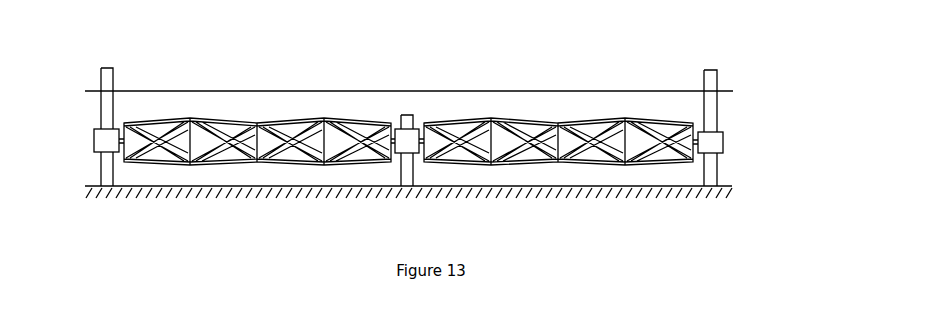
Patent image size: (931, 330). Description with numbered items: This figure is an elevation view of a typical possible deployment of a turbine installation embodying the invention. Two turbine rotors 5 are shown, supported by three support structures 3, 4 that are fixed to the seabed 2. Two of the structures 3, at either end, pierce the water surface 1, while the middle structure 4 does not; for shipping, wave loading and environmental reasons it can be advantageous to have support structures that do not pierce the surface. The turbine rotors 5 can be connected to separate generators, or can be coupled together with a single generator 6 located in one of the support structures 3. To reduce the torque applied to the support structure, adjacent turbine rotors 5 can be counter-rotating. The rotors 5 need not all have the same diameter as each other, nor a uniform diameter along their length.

The water surface 1 is at (349, 88).
The seabed 2 is at (351, 193).
The support structure 3 is at (119, 76).
The support structure 4 is at (422, 113).
The turbine rotor 5 is at (223, 168).
The generator 6 is at (731, 140).